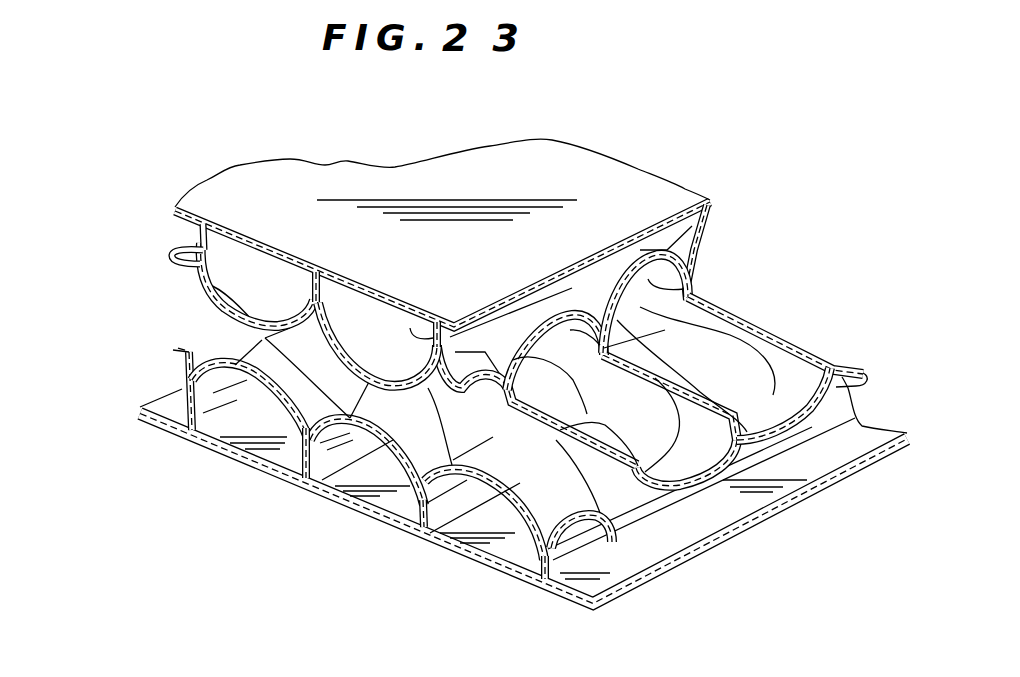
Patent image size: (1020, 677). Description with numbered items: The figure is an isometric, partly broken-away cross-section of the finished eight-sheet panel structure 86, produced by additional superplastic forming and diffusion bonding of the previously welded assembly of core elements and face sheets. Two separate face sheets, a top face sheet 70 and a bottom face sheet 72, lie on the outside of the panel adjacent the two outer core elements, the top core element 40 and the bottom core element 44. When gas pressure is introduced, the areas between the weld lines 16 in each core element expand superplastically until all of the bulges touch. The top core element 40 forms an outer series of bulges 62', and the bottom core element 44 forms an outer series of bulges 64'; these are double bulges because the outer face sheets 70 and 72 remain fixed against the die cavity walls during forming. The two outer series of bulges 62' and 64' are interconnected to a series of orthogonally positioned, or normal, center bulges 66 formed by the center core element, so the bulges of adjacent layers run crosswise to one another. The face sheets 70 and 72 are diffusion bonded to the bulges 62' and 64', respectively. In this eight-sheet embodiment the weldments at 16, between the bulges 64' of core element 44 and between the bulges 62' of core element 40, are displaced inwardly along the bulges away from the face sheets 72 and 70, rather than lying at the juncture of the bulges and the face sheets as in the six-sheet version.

The weld lines 16 is at (201, 245).
The top core element 40 is at (716, 227).
The bottom core element 44 is at (247, 466).
The outer bulges 62' is at (327, 253).
The outer bulges 64' is at (395, 484).
The center bulges 66 is at (265, 338).
The top face sheet 70 is at (578, 126).
The bottom face sheet 72 is at (833, 461).
The eight-sheet panel structure 86 is at (700, 146).